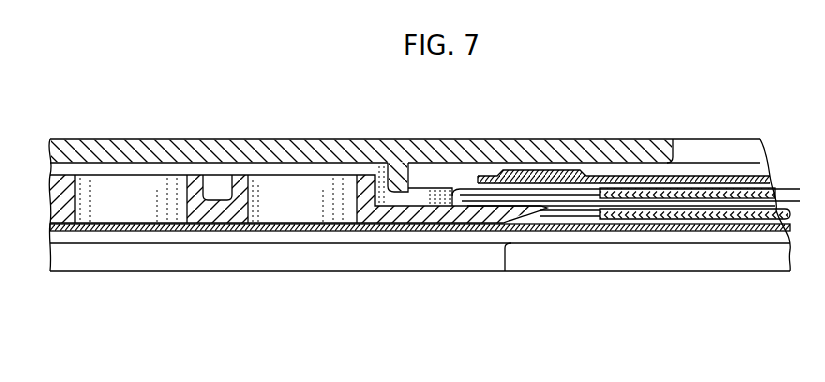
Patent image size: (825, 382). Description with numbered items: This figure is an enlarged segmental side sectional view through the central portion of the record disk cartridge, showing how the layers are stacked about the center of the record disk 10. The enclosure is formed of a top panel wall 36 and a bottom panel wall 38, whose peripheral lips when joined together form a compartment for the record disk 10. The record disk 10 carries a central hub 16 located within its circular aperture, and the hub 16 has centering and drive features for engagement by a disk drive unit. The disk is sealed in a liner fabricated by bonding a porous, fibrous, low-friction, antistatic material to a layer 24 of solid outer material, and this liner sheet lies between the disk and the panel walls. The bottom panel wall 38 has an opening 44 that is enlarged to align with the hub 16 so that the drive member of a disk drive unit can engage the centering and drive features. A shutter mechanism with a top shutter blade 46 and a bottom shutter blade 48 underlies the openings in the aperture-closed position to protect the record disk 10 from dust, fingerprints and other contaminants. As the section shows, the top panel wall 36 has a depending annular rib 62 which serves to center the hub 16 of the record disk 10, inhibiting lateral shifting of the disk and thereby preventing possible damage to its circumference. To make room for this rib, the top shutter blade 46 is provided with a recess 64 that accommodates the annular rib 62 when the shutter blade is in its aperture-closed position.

The record disk 10 is at (508, 206).
The central hub 16 is at (283, 177).
The layer of solid outer material 24 is at (713, 177).
The top panel wall 36 is at (553, 150).
The bottom panel wall 38 is at (400, 253).
The opening 44 is at (562, 253).
The top shutter blade 46 is at (741, 177).
The bottom shutter blade 48 is at (747, 231).
The annular rib 62 is at (400, 168).
The recess 64 is at (470, 178).